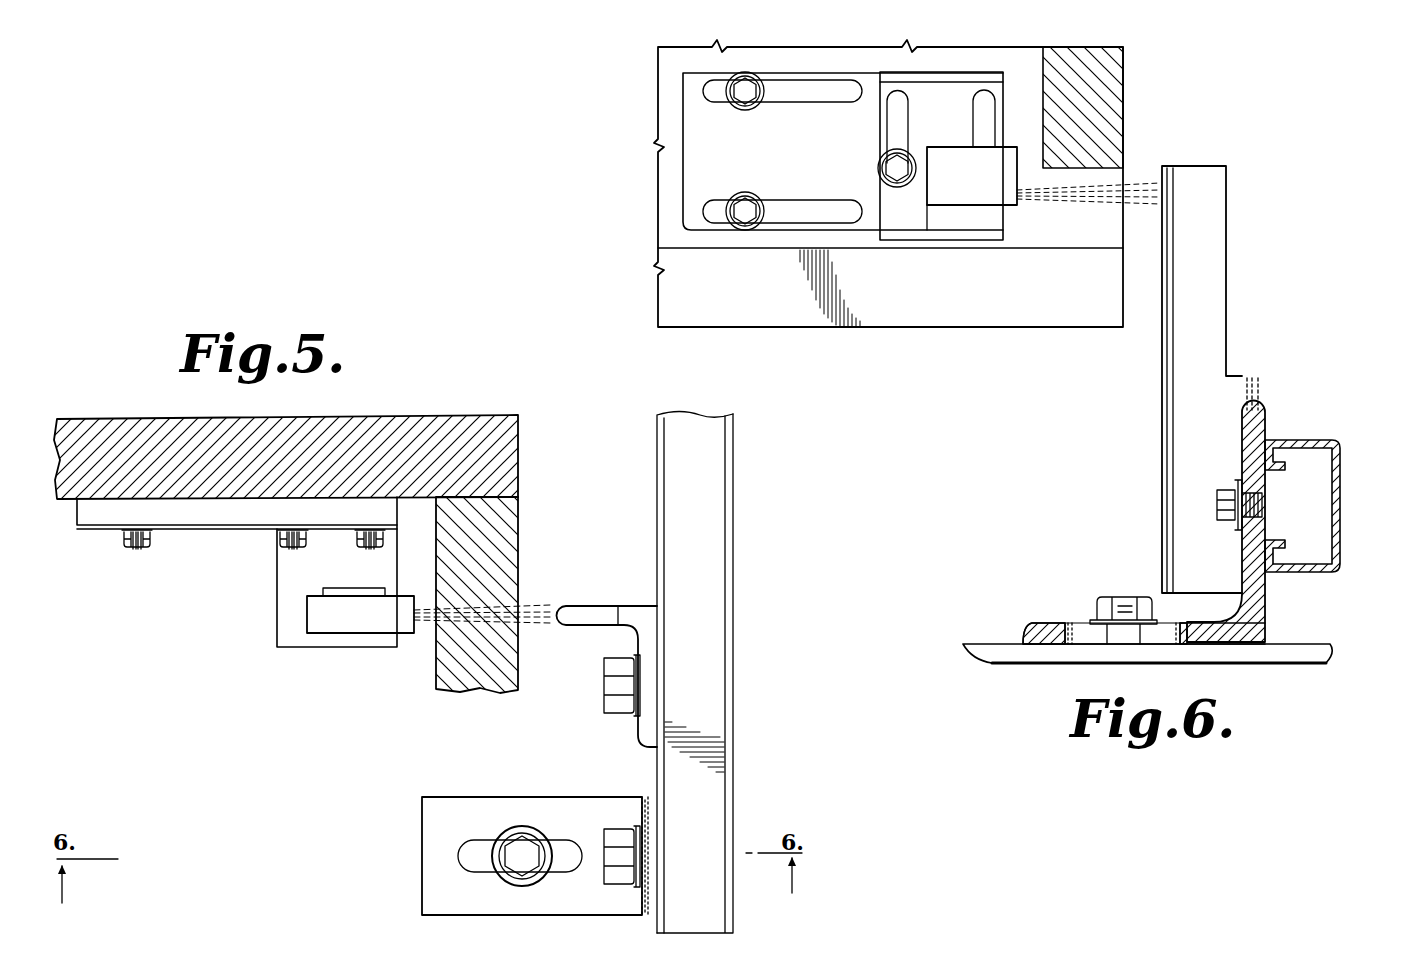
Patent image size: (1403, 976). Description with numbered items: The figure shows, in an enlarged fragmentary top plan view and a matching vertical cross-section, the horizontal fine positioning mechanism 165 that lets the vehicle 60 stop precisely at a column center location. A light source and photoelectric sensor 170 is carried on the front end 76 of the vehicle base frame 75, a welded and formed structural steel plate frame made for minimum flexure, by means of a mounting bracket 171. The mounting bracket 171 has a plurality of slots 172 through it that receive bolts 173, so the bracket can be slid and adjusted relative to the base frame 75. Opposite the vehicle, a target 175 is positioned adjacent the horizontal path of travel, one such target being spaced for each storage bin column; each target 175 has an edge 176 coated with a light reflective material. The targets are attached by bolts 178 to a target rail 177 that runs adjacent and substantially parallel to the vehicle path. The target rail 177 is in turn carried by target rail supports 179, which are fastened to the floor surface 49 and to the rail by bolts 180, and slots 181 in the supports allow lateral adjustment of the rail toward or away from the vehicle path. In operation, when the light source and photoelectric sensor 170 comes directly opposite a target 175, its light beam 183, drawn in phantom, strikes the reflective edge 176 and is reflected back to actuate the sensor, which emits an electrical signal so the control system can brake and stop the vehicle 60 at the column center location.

In FIG. 6, the floor surface 49 is at (982, 644).
In FIG. 5, the vehicle 60 is at (304, 539).
In FIG. 6, the vehicle 60 is at (872, 199).
In FIG. 5, the base frame 75 is at (118, 419).
In FIG. 6, the base frame 75 is at (810, 328).
In FIG. 5, the front end 76 is at (373, 415).
In FIG. 6, the front end 76 is at (976, 328).
In FIG. 5, the horizontal fine positioning mechanism 165 is at (326, 758).
In FIG. 6, the horizontal fine positioning mechanism 165 is at (1024, 470).
In FIG. 5, the light source and photoelectric sensor 170 is at (315, 634).
In FIG. 6, the light source and photoelectric sensor 170 is at (926, 206).
In FIG. 5, the mounting bracket 171 is at (80, 530).
In FIG. 6, the mounting bracket 171 is at (683, 230).
In FIG. 6, the slots 172 is at (826, 204).
In FIG. 5, the bolts 173 is at (132, 547).
In FIG. 6, the bolts 173 is at (745, 112).
In FIG. 5, the target 175 is at (658, 612).
In FIG. 6, the target 175 is at (1228, 168).
In FIG. 5, the edge 176 is at (562, 628).
In FIG. 6, the edge 176 is at (1163, 172).
In FIG. 5, the target rail 177 is at (735, 672).
In FIG. 6, the target rail 177 is at (1335, 440).
In FIG. 5, the bolts 178 is at (608, 710).
In FIG. 6, the bolts 178 is at (1223, 488).
In FIG. 5, the target rail supports 179 is at (420, 797).
In FIG. 6, the target rail supports 179 is at (1028, 626).
In FIG. 5, the bolts 180 is at (528, 840).
In FIG. 6, the bolts 180 is at (1136, 597).
In FIG. 5, the slots 181 is at (481, 845).
In FIG. 6, the slots 181 is at (1080, 626).
In FIG. 5, the light beam 183 is at (540, 606).
In FIG. 6, the light beam 183 is at (1088, 193).